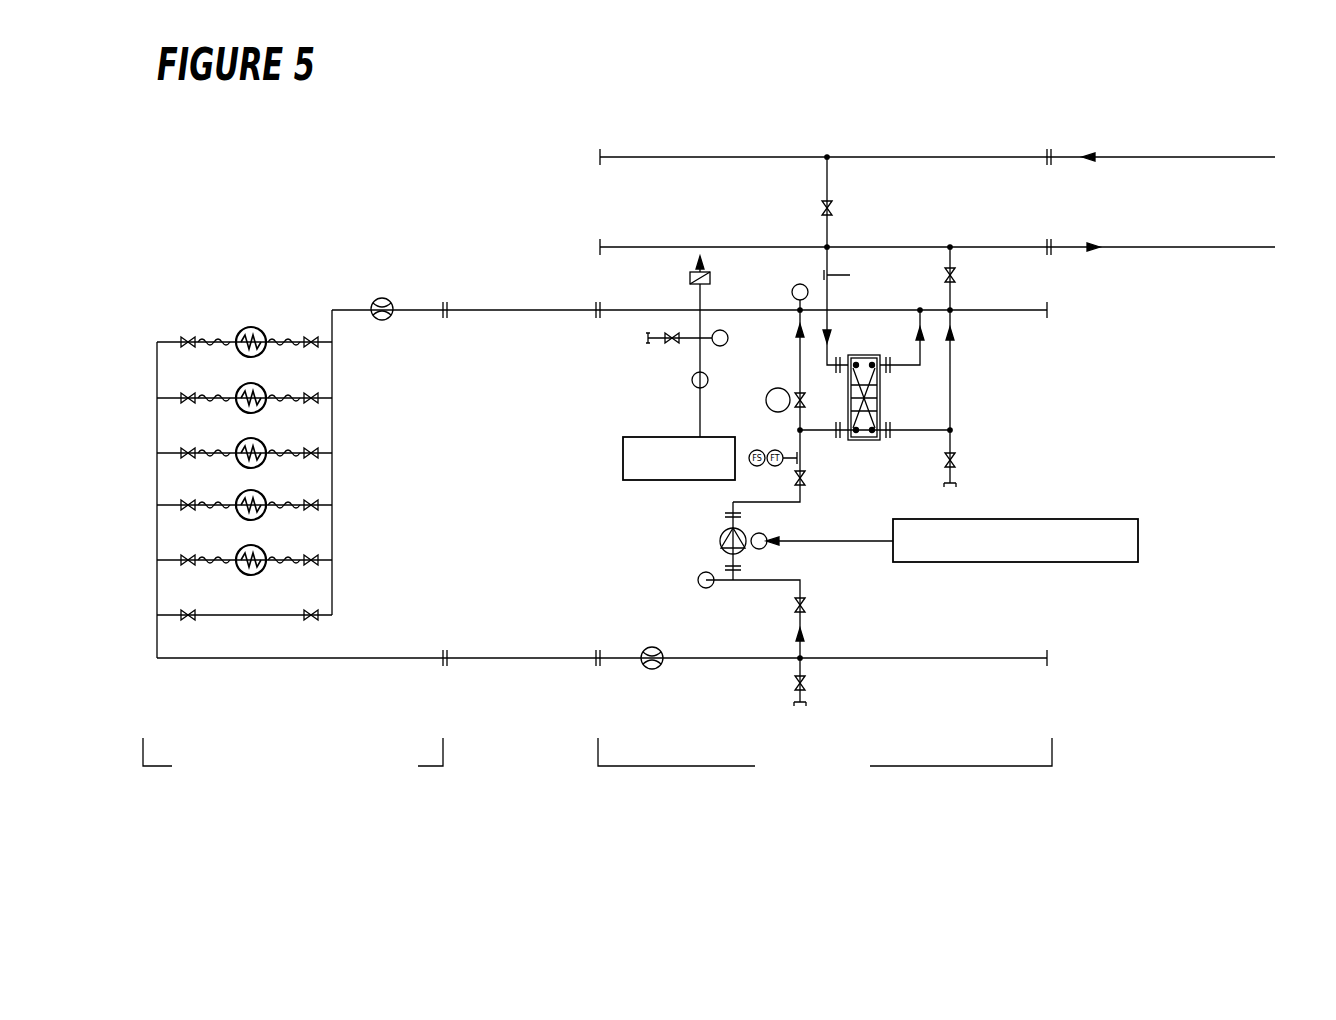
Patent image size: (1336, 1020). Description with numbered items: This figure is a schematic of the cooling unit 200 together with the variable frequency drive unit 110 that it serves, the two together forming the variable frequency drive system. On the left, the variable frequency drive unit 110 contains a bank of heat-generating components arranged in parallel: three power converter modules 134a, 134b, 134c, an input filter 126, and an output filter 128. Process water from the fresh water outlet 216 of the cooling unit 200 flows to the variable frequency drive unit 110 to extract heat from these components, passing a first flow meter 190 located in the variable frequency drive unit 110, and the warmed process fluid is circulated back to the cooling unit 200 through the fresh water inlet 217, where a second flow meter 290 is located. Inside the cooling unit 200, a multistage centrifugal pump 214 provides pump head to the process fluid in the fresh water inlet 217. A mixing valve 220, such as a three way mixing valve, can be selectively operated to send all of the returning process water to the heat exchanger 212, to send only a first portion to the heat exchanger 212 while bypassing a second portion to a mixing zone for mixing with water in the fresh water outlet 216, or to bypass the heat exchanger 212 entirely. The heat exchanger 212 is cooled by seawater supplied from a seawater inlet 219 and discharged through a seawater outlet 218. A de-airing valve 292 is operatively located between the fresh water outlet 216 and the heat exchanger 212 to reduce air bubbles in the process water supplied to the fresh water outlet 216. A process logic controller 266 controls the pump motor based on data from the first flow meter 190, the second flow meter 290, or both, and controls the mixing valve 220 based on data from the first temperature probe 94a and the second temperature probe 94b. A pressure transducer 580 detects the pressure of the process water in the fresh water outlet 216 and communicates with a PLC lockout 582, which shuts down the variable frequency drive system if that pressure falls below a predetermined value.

The variable frequency drive unit 110 is at (443, 760).
The power converter module 134a is at (332, 342).
The power converter module 134b is at (332, 398).
The power converter module 134c is at (332, 453).
The input filter 126 is at (332, 505).
The output filter 128 is at (332, 560).
The first flow meter 190 is at (374, 302).
The fresh water outlet 216 is at (596, 312).
The fresh water inlet 217 is at (596, 662).
The second flow meter 290 is at (662, 650).
The seawater outlet 218 is at (1228, 157).
The seawater inlet 219 is at (1228, 247).
The heat exchanger 212 is at (882, 400).
The mixing valve 220 is at (772, 398).
The de-airing valve 292 is at (712, 282).
The first temperature probe 94a is at (792, 295).
The second temperature probe 94b is at (712, 587).
The pressure transducer 580 is at (692, 382).
The PLC lockout 582 is at (628, 437).
The multistage centrifugal pump 214 is at (722, 532).
The process logic controller 266 is at (1085, 519).
The cooling unit 200 is at (1052, 760).